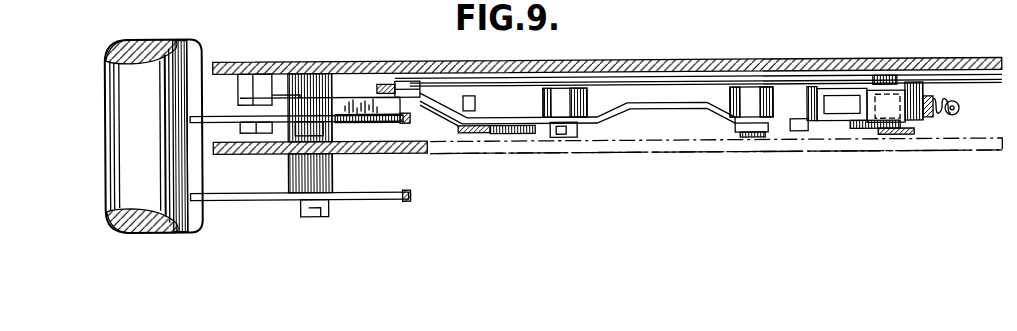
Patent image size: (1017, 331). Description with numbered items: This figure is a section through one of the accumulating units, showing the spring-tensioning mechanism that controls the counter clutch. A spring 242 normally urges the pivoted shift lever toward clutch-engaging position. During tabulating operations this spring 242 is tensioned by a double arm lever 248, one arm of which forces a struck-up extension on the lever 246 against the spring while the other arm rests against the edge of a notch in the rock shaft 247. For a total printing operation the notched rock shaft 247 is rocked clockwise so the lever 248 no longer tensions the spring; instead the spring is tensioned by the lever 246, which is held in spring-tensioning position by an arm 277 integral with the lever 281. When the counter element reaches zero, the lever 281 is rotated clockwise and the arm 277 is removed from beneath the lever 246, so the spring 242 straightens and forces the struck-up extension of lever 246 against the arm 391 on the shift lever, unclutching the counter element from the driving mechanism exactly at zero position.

The spring 242 is at (353, 105).
The lever 246 is at (428, 127).
The rock shaft 247 is at (118, 104).
The double arm lever 248 is at (225, 121).
The arm 277 is at (707, 107).
The lever 281 is at (730, 124).
The arm 391 is at (430, 129).